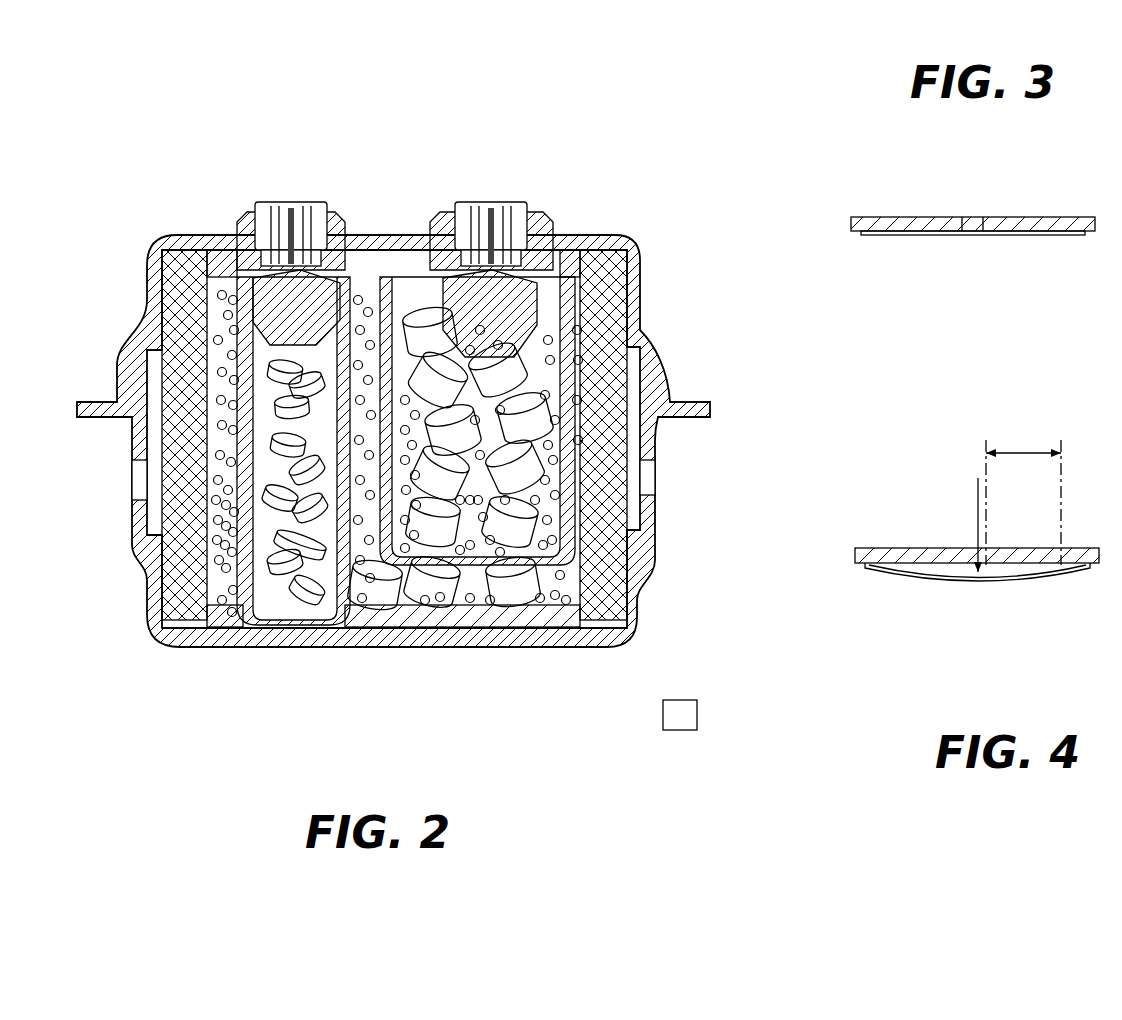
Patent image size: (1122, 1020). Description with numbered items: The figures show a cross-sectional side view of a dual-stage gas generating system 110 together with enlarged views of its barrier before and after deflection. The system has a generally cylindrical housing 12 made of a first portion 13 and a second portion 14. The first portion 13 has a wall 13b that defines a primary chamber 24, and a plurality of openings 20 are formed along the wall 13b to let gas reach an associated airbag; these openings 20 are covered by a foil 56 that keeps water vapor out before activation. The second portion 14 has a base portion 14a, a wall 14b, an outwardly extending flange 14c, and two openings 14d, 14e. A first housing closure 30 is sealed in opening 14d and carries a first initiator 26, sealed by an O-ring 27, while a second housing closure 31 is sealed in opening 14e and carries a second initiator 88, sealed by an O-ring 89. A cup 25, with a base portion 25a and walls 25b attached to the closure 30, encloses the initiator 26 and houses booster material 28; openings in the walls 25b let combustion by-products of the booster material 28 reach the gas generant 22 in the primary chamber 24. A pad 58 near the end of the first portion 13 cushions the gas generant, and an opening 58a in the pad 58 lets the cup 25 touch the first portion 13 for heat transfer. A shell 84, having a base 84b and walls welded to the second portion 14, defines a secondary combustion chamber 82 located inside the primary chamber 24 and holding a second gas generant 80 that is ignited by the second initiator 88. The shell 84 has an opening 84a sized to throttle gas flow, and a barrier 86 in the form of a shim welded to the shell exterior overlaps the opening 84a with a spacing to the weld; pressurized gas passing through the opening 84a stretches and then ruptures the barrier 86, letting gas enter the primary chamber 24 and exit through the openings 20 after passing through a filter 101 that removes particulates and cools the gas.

In FIG. 2, the housing 12 is at (128, 555).
In FIG. 2, the first portion 13 is at (152, 597).
In FIG. 2, the wall 13b is at (140, 467).
In FIG. 2, the second portion 14 is at (180, 233).
In FIG. 2, the base portion 14a is at (403, 240).
In FIG. 2, the wall 14b is at (628, 275).
In FIG. 2, the flange 14c is at (697, 395).
In FIG. 2, the opening 14d is at (357, 233).
In FIG. 2, the opening 14e is at (550, 237).
In FIG. 2, the openings 20 is at (137, 495).
In FIG. 2, the gas generant 22 is at (378, 577).
In FIG. 2, the primary chamber 24 is at (218, 312).
In FIG. 2, the cup 25 is at (253, 625).
In FIG. 2, the base portion 25a is at (280, 627).
In FIG. 2, the walls 25b is at (248, 410).
In FIG. 2, the first initiator 26 is at (280, 213).
In FIG. 2, the O-ring 27 is at (253, 290).
In FIG. 2, the booster material 28 is at (307, 585).
In FIG. 2, the first housing closure 30 is at (348, 200).
In FIG. 2, the second housing closure 31 is at (543, 213).
In FIG. 2, the foil 56 is at (128, 482).
In FIG. 2, the pad 58 is at (523, 617).
In FIG. 2, the opening 58a is at (238, 620).
In FIG. 2, the second gas generant composition 80 is at (523, 410).
In FIG. 2, the secondary combustion chamber 82 is at (552, 302).
In FIG. 2, the shell 84 is at (570, 370).
In FIG. 3, the shell 84 is at (897, 225).
In FIG. 4, the shell 84 is at (910, 553).
In FIG. 2, the opening 84a is at (477, 555).
In FIG. 3, the opening 84a is at (975, 225).
In FIG. 4, the opening 84a is at (983, 550).
In FIG. 2, the base 84b is at (680, 715).
In FIG. 2, the barrier 86 is at (457, 572).
In FIG. 3, the barrier 86 is at (915, 240).
In FIG. 4, the barrier 86 is at (933, 577).
In FIG. 2, the second initiator 88 is at (500, 217).
In FIG. 2, the O-ring 89 is at (523, 287).
In FIG. 2, the filter 101 is at (605, 317).
In FIG. 2, the gas generating system 110 is at (40, 223).